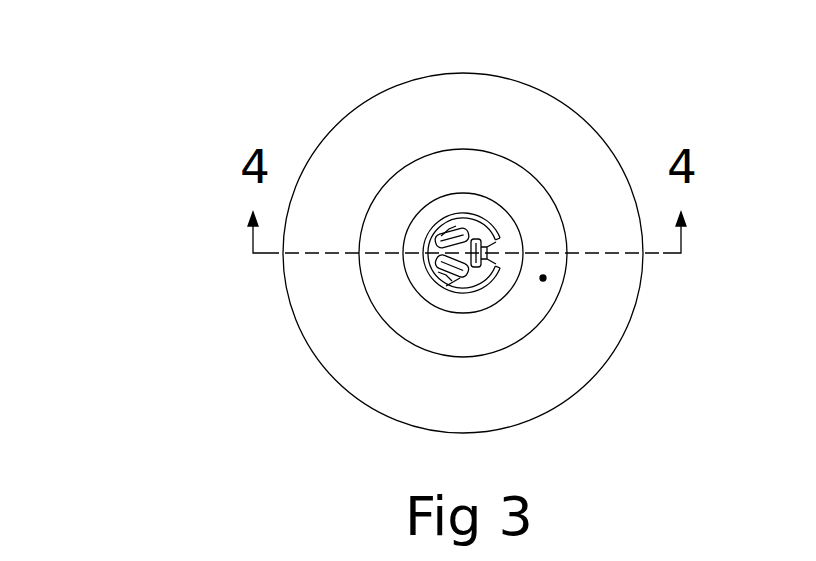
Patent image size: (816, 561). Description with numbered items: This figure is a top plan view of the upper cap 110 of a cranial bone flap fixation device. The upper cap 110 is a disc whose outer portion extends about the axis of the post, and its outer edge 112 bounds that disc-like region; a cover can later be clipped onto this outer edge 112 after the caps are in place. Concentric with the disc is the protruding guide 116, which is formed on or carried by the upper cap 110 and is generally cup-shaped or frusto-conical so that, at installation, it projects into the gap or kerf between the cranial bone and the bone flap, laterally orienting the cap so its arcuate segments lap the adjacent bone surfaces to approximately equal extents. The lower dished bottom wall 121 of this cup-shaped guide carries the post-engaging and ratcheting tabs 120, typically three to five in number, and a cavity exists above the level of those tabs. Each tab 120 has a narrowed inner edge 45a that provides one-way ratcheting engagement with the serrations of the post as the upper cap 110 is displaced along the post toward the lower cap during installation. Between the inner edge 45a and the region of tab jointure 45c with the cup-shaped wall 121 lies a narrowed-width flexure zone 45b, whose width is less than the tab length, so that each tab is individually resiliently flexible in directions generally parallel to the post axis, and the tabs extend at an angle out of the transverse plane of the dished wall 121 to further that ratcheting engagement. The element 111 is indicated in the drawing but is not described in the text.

The upper cap 110 is at (342, 253).
The housing wall 111 is at (551, 329).
The outer edge 112 is at (562, 278).
The protruding guide 116 is at (665, 301).
The post-engaging and ratcheting tabs 120 is at (360, 213).
The bottom wall of the cup-shaped guide 121 is at (567, 189).
The tab narrowed inner edges 45a is at (330, 152).
The narrowed width flexure zones 45b is at (381, 384).
The regions of tab jointure 45c is at (331, 308).